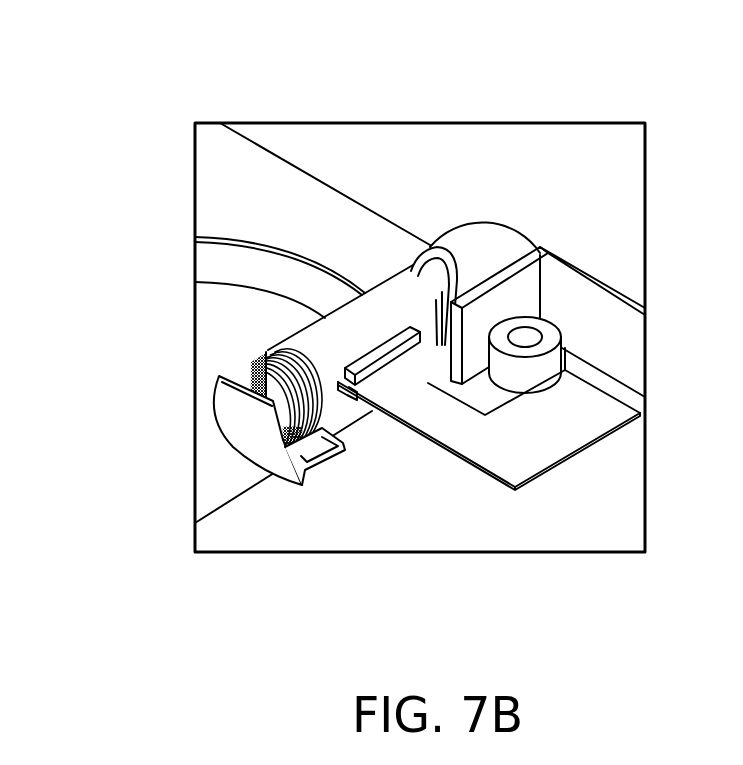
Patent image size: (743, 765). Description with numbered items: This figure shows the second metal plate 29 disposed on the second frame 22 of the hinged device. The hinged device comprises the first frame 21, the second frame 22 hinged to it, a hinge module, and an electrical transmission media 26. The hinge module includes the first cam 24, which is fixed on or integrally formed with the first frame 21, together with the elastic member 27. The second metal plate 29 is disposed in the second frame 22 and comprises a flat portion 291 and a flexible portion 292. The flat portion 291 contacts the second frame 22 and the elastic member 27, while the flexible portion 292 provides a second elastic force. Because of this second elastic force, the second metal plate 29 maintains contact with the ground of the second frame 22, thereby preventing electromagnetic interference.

The first frame 21 is at (228, 191).
The second frame 22 is at (520, 302).
The first cam 24 is at (452, 288).
The electrical transmission media 26 is at (567, 432).
The elastic member 27 is at (267, 367).
The second metal plate 29 is at (280, 522).
The flat portion 291 is at (255, 437).
The flexible portion 292 is at (343, 447).